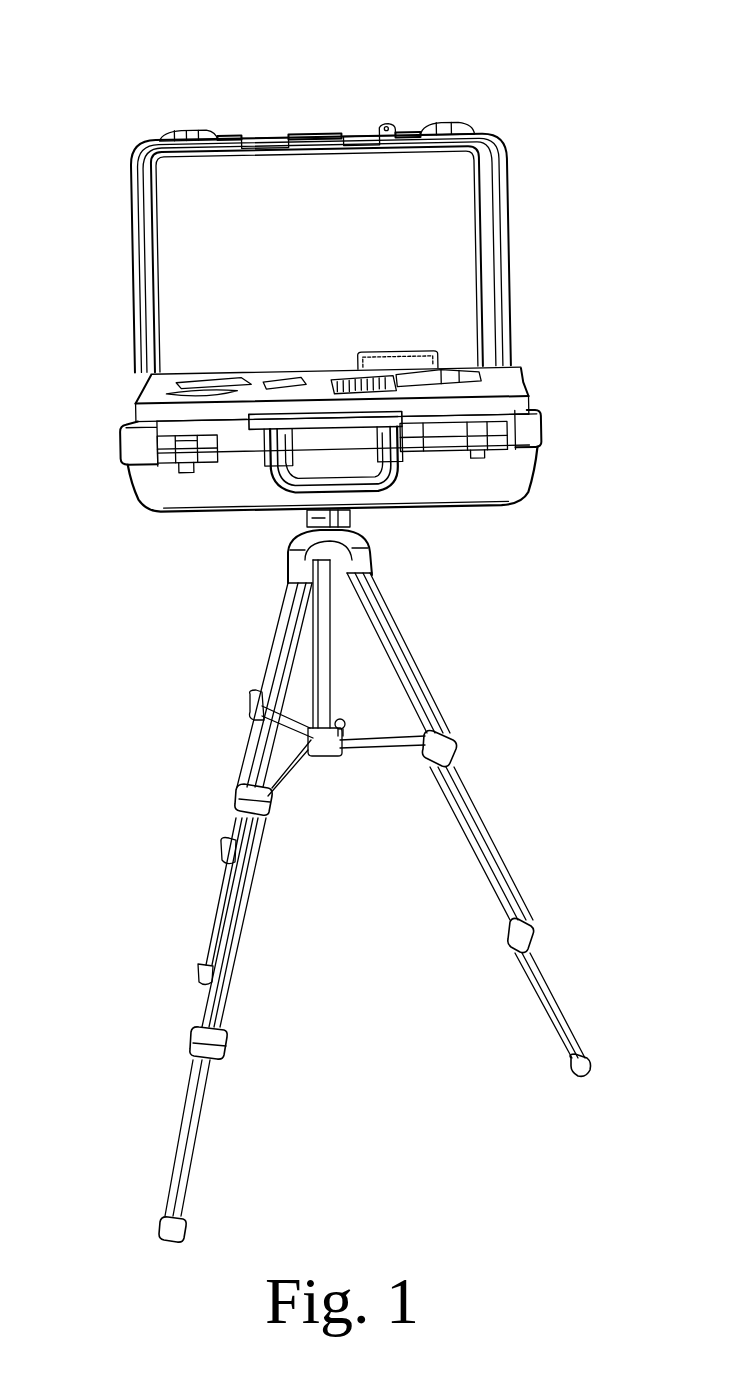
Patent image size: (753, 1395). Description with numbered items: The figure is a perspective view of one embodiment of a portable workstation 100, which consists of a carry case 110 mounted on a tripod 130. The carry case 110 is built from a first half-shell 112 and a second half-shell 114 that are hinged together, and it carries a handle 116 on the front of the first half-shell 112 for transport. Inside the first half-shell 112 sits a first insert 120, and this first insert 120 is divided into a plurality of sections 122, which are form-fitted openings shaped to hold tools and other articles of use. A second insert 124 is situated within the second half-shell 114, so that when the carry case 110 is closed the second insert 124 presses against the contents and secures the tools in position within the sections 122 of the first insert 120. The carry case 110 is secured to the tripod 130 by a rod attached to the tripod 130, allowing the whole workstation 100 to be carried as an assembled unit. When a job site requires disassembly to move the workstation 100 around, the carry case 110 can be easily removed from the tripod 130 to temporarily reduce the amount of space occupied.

The workstation 100 is at (545, 38).
The carry case 110 is at (548, 326).
The first half-shell 112 is at (533, 462).
The second half-shell 114 is at (513, 196).
The handle 116 is at (377, 487).
The first insert 120 is at (533, 393).
The sections 122 is at (152, 395).
The second insert 124 is at (158, 290).
The tripod 130 is at (468, 665).